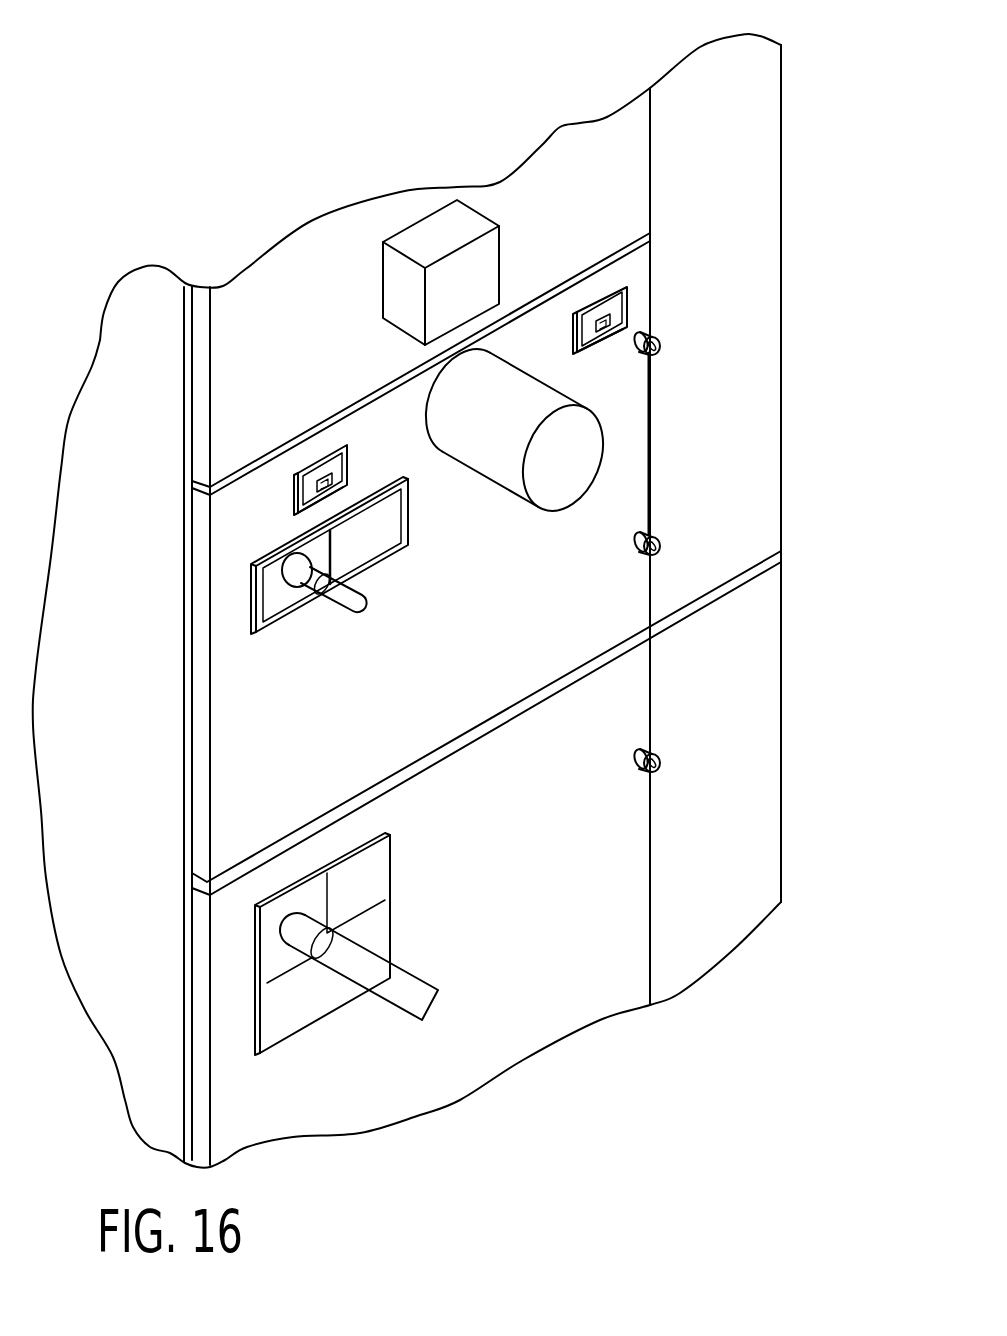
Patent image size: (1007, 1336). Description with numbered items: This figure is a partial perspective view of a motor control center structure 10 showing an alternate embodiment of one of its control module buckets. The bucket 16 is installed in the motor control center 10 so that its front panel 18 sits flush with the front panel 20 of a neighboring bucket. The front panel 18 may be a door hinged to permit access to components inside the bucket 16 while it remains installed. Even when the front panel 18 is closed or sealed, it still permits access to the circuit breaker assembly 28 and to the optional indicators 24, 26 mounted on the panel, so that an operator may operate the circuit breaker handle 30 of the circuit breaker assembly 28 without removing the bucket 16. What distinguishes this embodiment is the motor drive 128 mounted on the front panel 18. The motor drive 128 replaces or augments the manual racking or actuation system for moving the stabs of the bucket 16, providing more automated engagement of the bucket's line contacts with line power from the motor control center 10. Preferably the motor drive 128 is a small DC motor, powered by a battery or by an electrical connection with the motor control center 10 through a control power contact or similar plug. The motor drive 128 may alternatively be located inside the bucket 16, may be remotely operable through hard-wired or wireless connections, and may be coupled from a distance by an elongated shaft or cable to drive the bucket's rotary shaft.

The motor control center structure 10 is at (814, 142).
The bucket 16 is at (200, 737).
The front panel 18 is at (509, 617).
The front panel 20 is at (652, 330).
The indicator 24 is at (305, 488).
The indicator 26 is at (625, 302).
The circuit breaker assembly 28 is at (380, 537).
The circuit breaker handle 30 is at (327, 607).
The motor drive 128 is at (568, 458).